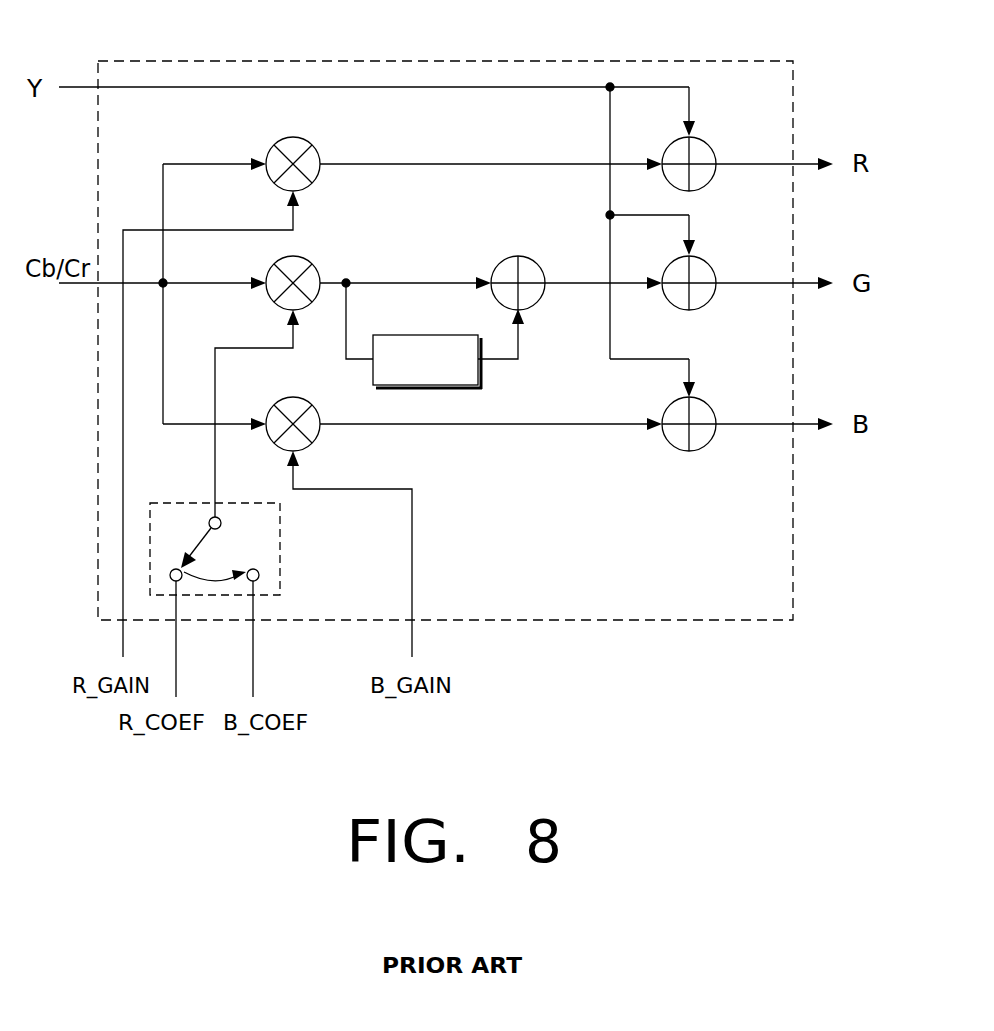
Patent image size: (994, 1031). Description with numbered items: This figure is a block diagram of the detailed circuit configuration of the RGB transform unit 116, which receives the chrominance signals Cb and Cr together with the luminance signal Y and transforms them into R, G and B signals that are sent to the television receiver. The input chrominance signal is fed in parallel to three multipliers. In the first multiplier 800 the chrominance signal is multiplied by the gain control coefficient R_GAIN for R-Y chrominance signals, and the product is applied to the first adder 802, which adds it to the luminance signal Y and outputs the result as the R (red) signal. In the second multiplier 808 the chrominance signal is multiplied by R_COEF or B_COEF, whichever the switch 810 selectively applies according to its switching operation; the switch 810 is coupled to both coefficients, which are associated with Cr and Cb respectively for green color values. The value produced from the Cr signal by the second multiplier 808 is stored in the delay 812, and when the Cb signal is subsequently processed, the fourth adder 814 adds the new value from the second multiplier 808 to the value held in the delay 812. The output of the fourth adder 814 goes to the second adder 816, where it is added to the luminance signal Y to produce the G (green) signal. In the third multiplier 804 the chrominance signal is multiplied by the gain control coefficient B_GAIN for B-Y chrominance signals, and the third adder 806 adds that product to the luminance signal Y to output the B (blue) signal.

The RGB transform unit 116 is at (531, 60).
The first multiplier 800 is at (306, 143).
The first adder 802 is at (703, 143).
The third multiplier 804 is at (277, 407).
The third adder 806 is at (703, 403).
The second multiplier 808 is at (306, 262).
The switch 810 is at (281, 541).
The delay 812 is at (400, 335).
The fourth adder 814 is at (535, 262).
The second adder 816 is at (703, 262).